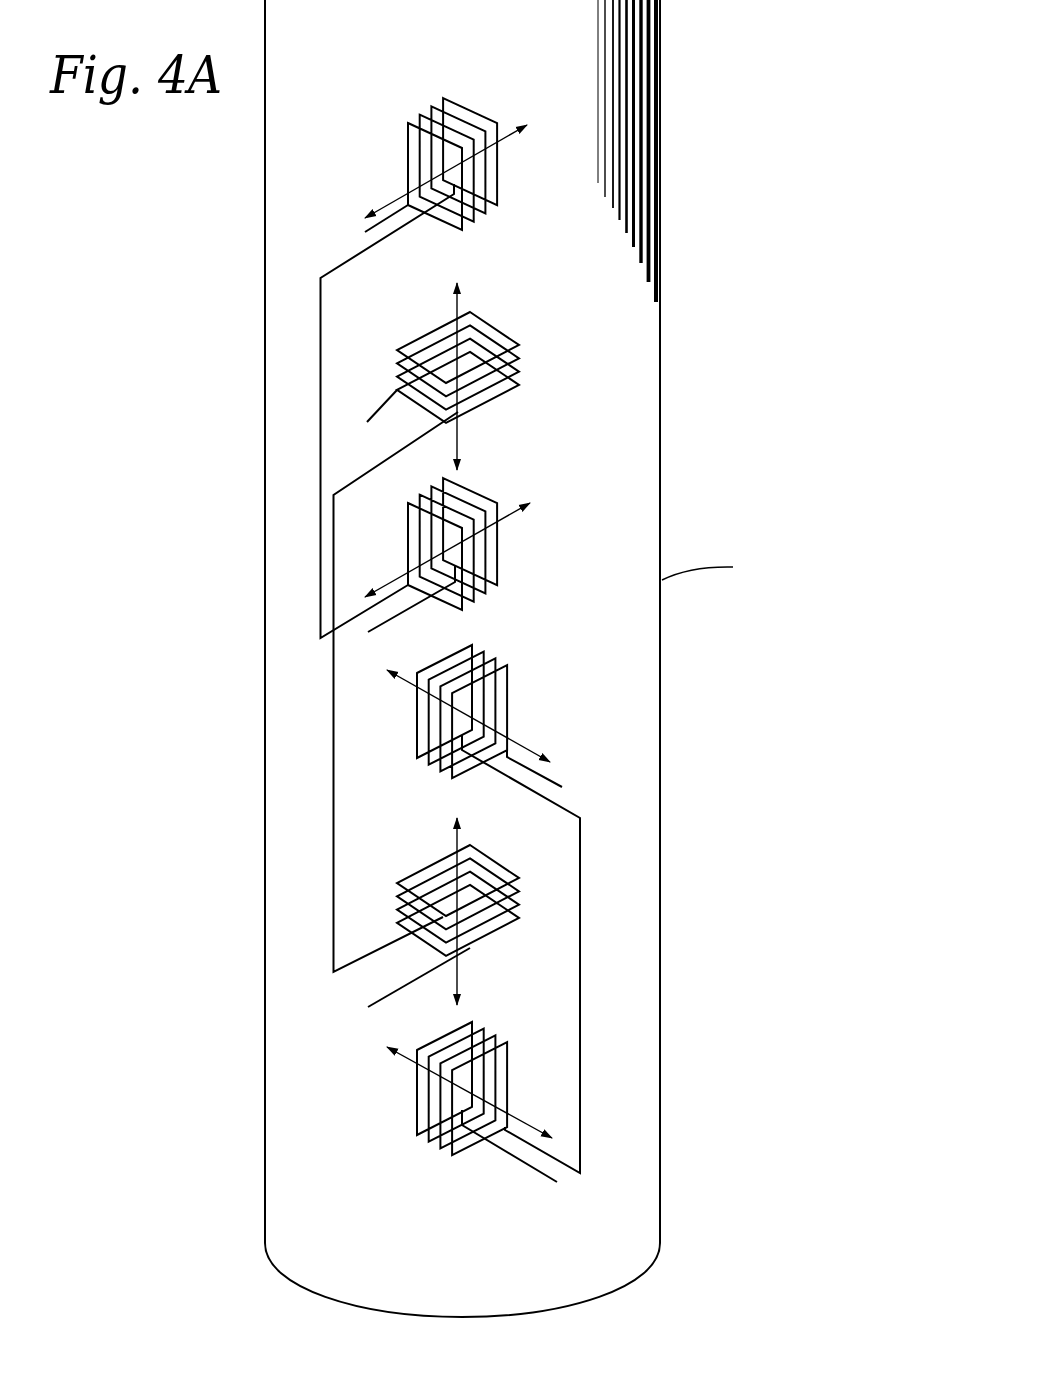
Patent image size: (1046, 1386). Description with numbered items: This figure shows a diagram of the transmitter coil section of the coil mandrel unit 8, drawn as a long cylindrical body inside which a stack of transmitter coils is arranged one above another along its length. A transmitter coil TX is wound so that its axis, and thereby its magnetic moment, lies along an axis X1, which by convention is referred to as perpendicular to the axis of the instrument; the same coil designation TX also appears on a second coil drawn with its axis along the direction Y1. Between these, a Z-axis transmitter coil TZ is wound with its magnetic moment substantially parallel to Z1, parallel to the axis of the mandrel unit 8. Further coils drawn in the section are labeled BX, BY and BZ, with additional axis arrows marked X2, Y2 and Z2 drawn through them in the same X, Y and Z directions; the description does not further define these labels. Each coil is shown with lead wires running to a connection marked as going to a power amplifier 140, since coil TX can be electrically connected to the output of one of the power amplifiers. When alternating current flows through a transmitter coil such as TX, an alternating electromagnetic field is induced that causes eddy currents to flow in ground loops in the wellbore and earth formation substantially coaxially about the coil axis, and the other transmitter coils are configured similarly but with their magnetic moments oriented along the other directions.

The power amplifier 140 is at (472, 706).
The coil mandrel unit 8 is at (758, 439).
The bucking Y coil BY is at (408, 155).
The bucking Z coil BZ is at (427, 337).
The bucking X coil BX is at (417, 727).
The transmitter coil TX is at (408, 538).
The transmitter coil TZ is at (423, 870).
The axis Y1 is at (464, 539).
The Y2 coil axis Y2 is at (464, 160).
The axis X1 is at (452, 1079).
The X2 coil axis X2 is at (452, 704).
The axis Z1 is at (460, 896).
The Z2 coil axis Z2 is at (460, 362).